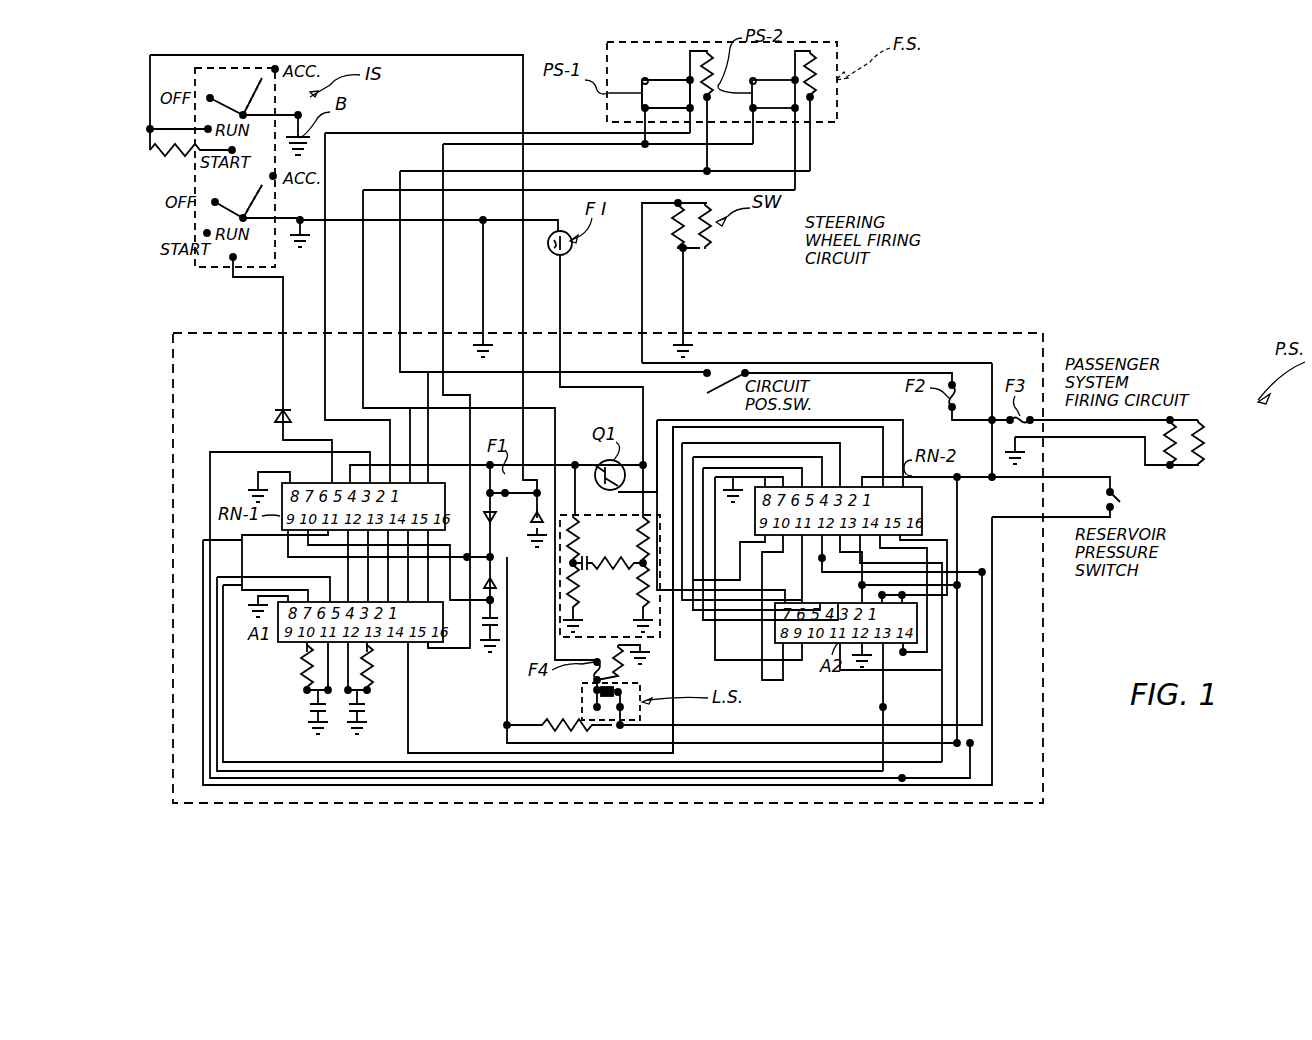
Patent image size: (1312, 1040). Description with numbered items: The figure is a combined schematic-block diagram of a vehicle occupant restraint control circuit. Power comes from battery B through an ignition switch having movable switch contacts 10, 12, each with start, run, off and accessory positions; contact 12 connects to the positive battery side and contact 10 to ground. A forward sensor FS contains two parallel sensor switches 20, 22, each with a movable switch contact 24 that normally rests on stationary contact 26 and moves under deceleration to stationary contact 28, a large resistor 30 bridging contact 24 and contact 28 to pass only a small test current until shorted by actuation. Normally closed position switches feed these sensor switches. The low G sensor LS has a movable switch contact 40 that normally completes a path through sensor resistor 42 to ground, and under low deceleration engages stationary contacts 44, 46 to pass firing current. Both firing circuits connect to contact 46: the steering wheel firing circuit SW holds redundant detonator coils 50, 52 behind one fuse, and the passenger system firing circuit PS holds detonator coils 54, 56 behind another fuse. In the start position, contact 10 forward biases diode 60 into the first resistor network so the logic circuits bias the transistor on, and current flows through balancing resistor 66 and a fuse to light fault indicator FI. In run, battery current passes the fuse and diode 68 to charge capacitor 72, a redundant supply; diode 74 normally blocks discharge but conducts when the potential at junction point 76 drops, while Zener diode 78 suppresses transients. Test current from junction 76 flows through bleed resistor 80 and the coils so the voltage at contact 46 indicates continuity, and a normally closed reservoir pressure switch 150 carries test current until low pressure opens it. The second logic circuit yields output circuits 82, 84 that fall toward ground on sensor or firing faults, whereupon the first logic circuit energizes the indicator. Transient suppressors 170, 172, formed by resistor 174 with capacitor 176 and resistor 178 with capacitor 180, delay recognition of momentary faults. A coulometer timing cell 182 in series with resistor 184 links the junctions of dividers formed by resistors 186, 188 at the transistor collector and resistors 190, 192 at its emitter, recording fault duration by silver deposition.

The movable switch contact 10 is at (250, 199).
The movable switch contact 12 is at (244, 96).
The sensor switch 20 is at (675, 74).
The sensor switch 22 is at (791, 80).
The movable switch contact 24 is at (666, 94).
The stationary contact 26 is at (690, 130).
The stationary contact 28 is at (709, 104).
The resistor 30 is at (707, 50).
The movable switch contact 40 is at (624, 686).
The sensor resistor 42 is at (611, 649).
The stationary contact 44 is at (600, 692).
The stationary contact 46 is at (623, 709).
The detonator coil 50 is at (673, 228).
The detonator coil 52 is at (714, 238).
The detonator coil 54 is at (1165, 459).
The detonator coil 56 is at (1204, 440).
The diode 60 is at (272, 412).
The balancing resistor 66 is at (163, 156).
The diode 68 is at (492, 502).
The capacitor 72 is at (500, 628).
The diode 74 is at (496, 582).
The junction point 76 is at (490, 557).
The Zener diode 78 is at (537, 521).
The bleed resistor 80 is at (554, 722).
The output circuit 82 is at (903, 778).
The output circuit 84 is at (885, 707).
The reservoir pressure switch 150 is at (1118, 503).
The transient suppressor 170 is at (300, 693).
The transient suppressor 172 is at (380, 683).
The resistor 174 is at (306, 662).
The capacitor 176 is at (314, 707).
The resistor 178 is at (375, 656).
The capacitor 180 is at (364, 712).
The coulometer timing cell 182 is at (588, 568).
The resistor 184 is at (625, 560).
The resistor 186 is at (582, 618).
The resistor 188 is at (577, 534).
The resistor 190 is at (638, 602).
The resistor 192 is at (639, 515).